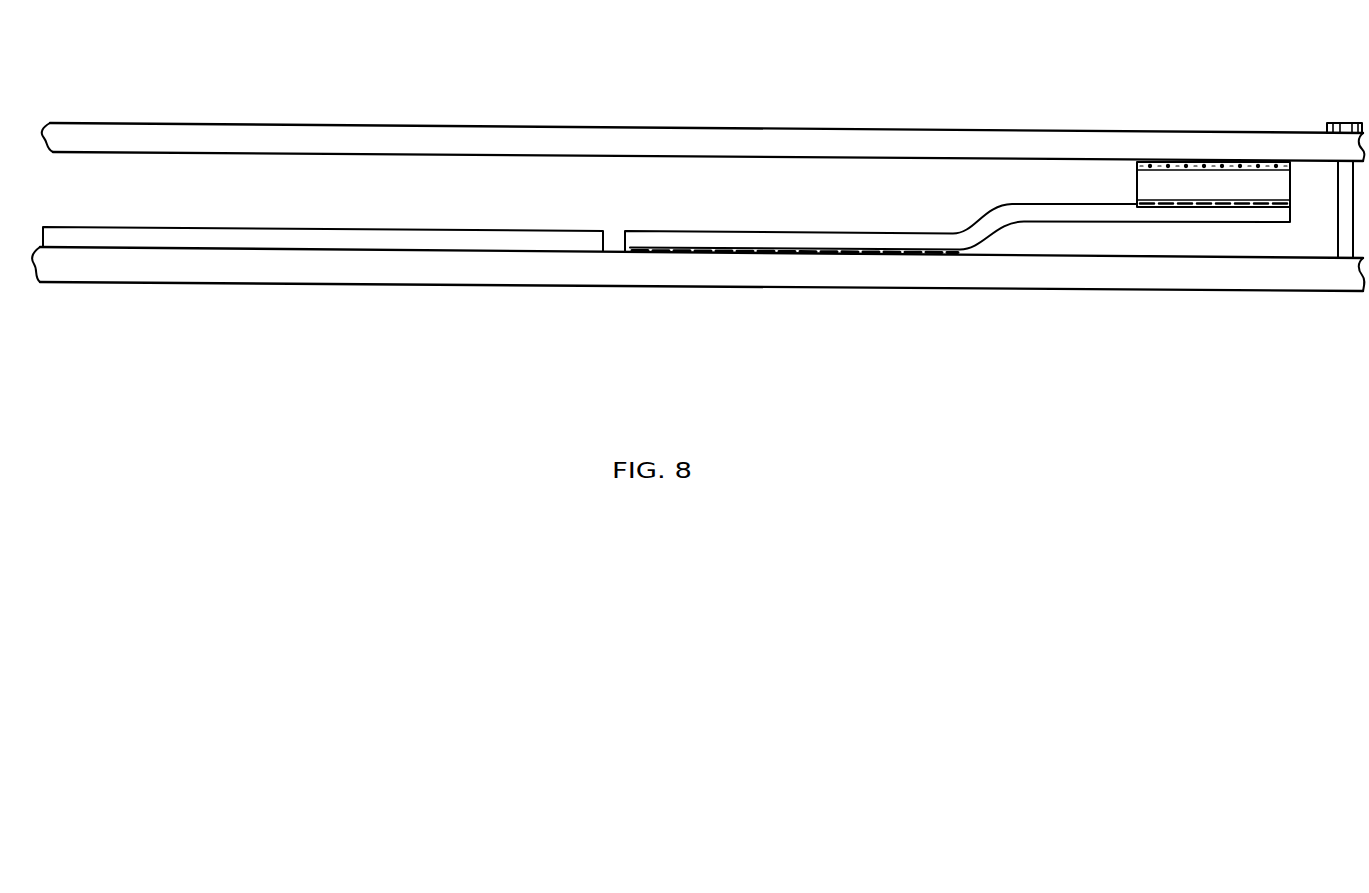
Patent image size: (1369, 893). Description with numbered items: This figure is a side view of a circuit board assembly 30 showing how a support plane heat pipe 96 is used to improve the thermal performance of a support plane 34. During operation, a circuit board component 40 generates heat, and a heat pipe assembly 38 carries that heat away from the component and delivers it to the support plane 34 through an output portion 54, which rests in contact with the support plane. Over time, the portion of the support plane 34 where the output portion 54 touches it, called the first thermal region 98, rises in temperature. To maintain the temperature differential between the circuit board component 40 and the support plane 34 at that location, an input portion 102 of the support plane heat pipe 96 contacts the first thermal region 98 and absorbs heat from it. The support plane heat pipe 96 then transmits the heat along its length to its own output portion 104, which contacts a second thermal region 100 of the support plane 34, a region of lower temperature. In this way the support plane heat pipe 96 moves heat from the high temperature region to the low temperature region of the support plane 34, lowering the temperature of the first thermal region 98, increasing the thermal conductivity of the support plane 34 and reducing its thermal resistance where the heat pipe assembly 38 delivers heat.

The circuit board assembly 30 is at (893, 82).
The support plane 34 is at (1300, 284).
The heat pipe assembly 38 is at (1030, 178).
The circuit board component 40 is at (1198, 182).
The output portion 54 is at (688, 218).
The support plane heat pipe 96 is at (430, 229).
The first thermal region 98 is at (651, 296).
The second thermal region 100 is at (86, 288).
The input portion 102 is at (536, 220).
The output portion 104 is at (60, 215).